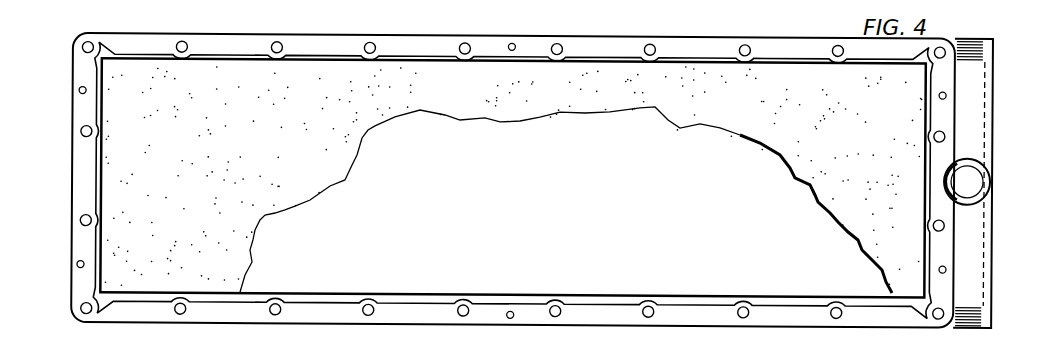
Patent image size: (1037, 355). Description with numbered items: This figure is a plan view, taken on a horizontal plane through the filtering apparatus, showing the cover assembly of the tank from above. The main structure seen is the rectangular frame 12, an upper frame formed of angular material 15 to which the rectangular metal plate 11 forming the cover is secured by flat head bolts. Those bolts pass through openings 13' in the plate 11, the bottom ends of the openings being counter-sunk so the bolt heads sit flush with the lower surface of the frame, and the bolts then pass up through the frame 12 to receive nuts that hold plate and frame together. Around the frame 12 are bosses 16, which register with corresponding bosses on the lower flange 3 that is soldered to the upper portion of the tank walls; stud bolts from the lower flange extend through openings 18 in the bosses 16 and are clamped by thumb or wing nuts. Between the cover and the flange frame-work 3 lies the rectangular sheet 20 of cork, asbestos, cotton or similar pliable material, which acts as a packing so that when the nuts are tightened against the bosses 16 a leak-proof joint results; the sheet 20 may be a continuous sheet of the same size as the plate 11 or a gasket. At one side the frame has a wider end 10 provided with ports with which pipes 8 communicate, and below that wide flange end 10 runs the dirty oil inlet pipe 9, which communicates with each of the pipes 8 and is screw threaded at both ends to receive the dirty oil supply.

The flange 3 is at (973, 275).
The pipes 8 is at (971, 178).
The dirty oil inlet pipe 9 is at (985, 232).
The end of the rectangular frame 10 is at (986, 69).
The rectangular metal plate 11 is at (447, 275).
The rectangular frame 12 is at (82, 185).
The opening 13' is at (527, 195).
The angular material 15 is at (100, 161).
The bosses 16 is at (84, 136).
The openings 18 is at (85, 218).
The rectangular sheet 20 is at (115, 104).